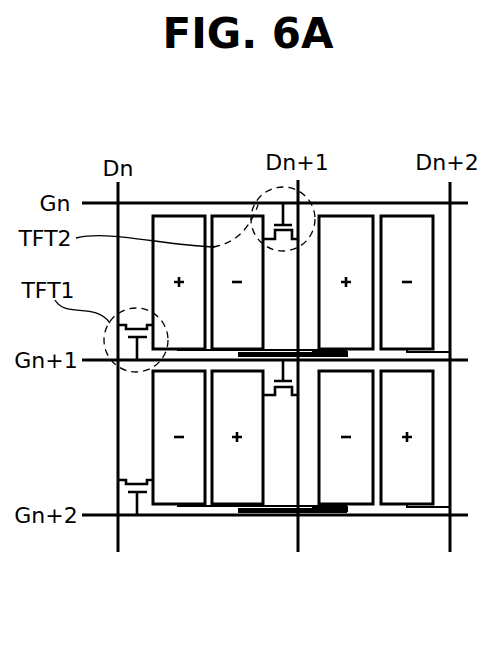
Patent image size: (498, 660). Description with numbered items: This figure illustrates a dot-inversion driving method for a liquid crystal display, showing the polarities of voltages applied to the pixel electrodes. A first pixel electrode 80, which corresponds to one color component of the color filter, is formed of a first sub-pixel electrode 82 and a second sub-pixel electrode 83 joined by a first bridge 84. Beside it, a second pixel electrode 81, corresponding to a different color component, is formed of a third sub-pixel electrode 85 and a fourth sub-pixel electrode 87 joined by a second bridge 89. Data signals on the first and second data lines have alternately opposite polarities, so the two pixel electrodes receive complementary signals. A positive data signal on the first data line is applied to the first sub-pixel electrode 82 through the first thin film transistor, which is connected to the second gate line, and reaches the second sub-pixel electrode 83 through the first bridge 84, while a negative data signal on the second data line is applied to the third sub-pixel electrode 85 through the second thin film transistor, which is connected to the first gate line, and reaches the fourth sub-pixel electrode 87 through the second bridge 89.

The first pixel electrode 80 is at (327, 605).
The second pixel electrode 81 is at (395, 112).
The first sub-pixel electrode 82 is at (187, 340).
The second sub-pixel electrode 83 is at (360, 343).
The first bridge 84 is at (264, 357).
The third sub-pixel electrode 85 is at (238, 228).
The fourth sub-pixel electrode 87 is at (400, 227).
The second bridge 89 is at (314, 345).